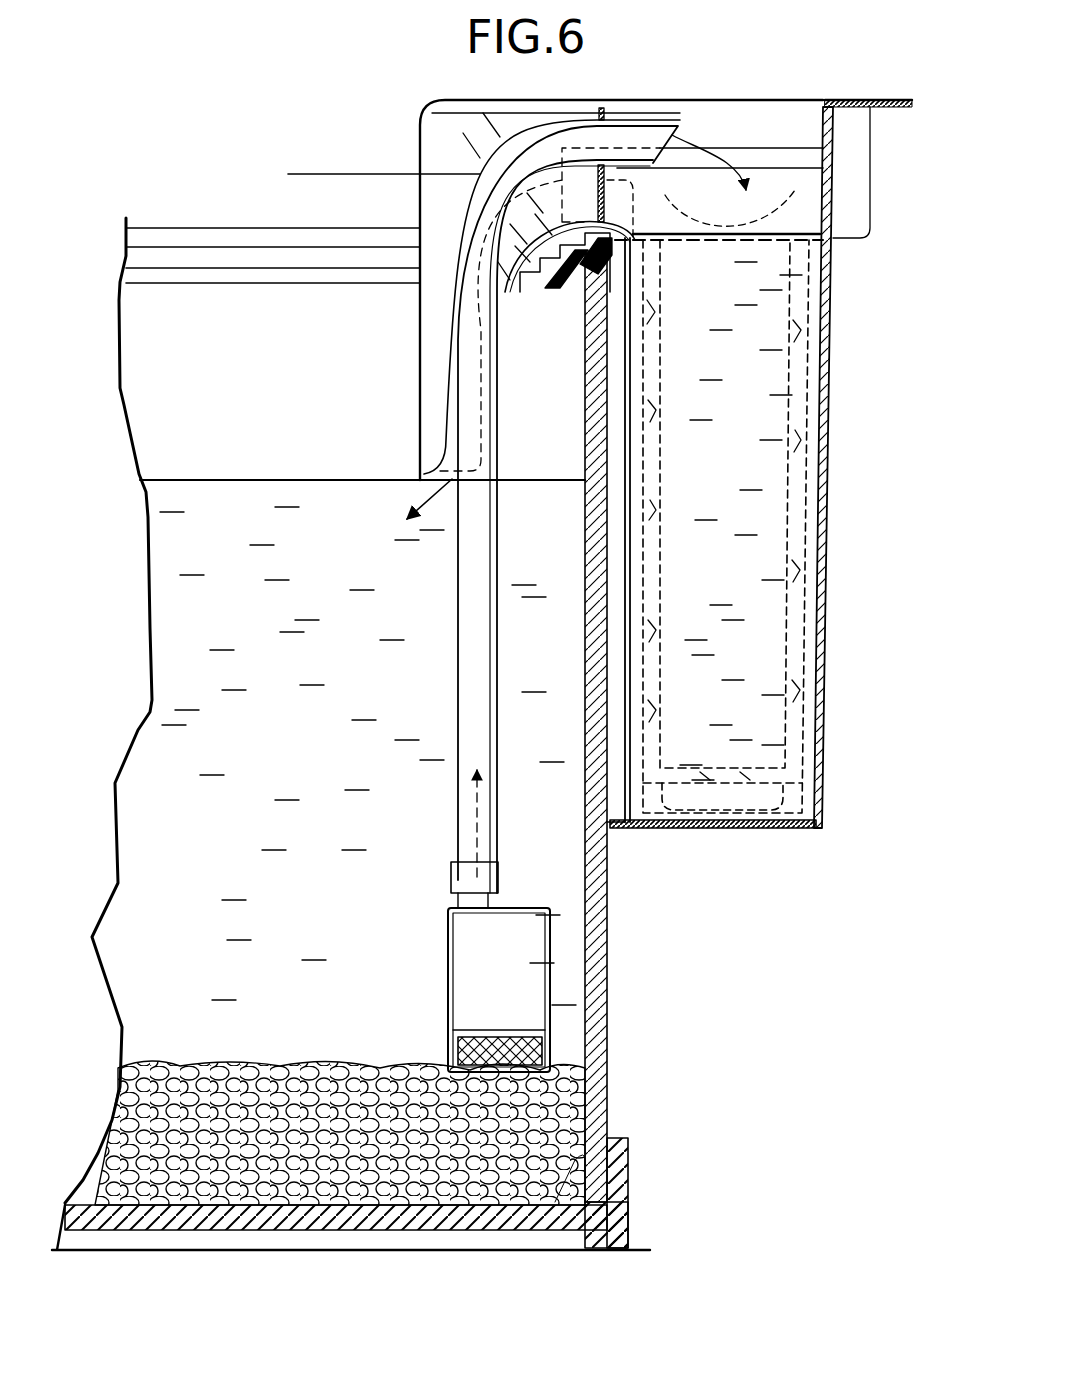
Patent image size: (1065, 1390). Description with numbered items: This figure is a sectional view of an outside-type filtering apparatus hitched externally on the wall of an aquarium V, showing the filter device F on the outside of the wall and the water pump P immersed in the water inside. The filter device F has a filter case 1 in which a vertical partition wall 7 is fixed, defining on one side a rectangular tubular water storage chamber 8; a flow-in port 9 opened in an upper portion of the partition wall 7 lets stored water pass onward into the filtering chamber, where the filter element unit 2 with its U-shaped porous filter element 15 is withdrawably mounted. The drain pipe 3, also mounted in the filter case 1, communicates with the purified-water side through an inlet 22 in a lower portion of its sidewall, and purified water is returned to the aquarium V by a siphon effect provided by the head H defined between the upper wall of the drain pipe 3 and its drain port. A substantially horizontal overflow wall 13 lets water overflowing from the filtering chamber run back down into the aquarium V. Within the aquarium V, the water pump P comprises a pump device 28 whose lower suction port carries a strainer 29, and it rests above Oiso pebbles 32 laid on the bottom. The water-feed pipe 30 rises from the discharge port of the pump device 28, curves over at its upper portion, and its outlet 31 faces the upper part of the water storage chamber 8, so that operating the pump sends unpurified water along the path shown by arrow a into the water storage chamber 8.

The filter case 1 is at (820, 602).
The filter element unit 2 is at (807, 677).
The drain pipe 3 is at (513, 287).
The partition wall 7 is at (772, 298).
The water storage chamber 8 is at (737, 490).
The flow-in port 9 is at (731, 194).
The overflow wall 13 is at (590, 225).
The filter element 15 is at (782, 462).
The inlet 22 is at (723, 828).
The pump device 28 is at (518, 960).
The strainer 29 is at (458, 1052).
The water-feed pipe 30 is at (460, 617).
The outlet 31 is at (697, 204).
The Oiso pebbles 32 is at (298, 1062).
The water pump P is at (446, 958).
The aquarium V is at (612, 1083).
The filter device F is at (842, 433).
The head H is at (312, 174).
The arrow a is at (705, 152).